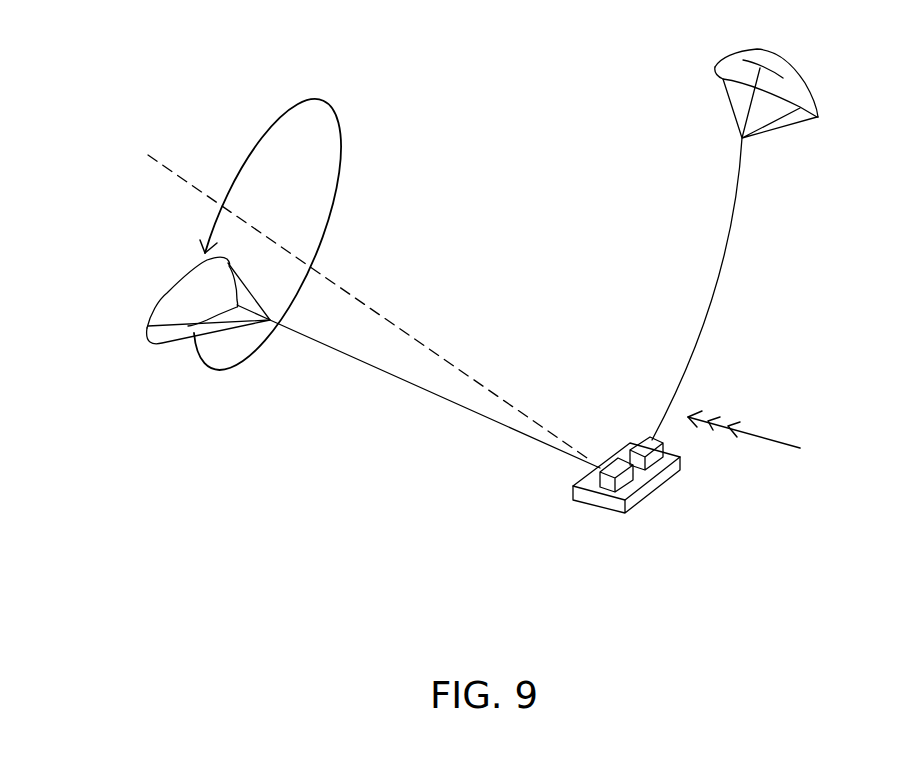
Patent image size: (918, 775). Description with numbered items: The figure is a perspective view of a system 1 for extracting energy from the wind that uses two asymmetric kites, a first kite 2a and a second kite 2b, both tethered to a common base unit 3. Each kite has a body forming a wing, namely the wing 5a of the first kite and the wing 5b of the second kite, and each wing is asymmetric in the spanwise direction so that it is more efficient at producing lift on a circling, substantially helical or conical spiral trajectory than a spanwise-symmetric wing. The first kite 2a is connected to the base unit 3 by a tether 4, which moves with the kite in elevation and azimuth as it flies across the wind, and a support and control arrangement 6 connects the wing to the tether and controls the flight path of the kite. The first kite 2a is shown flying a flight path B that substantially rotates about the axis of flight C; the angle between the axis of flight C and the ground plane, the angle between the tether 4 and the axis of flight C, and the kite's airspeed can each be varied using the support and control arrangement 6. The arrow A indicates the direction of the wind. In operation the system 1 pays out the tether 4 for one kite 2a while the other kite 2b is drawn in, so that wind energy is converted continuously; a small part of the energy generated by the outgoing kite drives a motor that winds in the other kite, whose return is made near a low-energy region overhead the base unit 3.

The system 1 is at (283, 502).
The kite 2a is at (141, 344).
The kite 2b is at (695, 239).
The base unit 3 is at (640, 507).
The tether 4 is at (350, 360).
The wing 5a is at (163, 290).
The wing 5b is at (727, 55).
The support and control arrangement 6 is at (130, 313).
The wind direction A is at (744, 428).
The flight path B is at (280, 118).
The axis of flight C is at (150, 160).